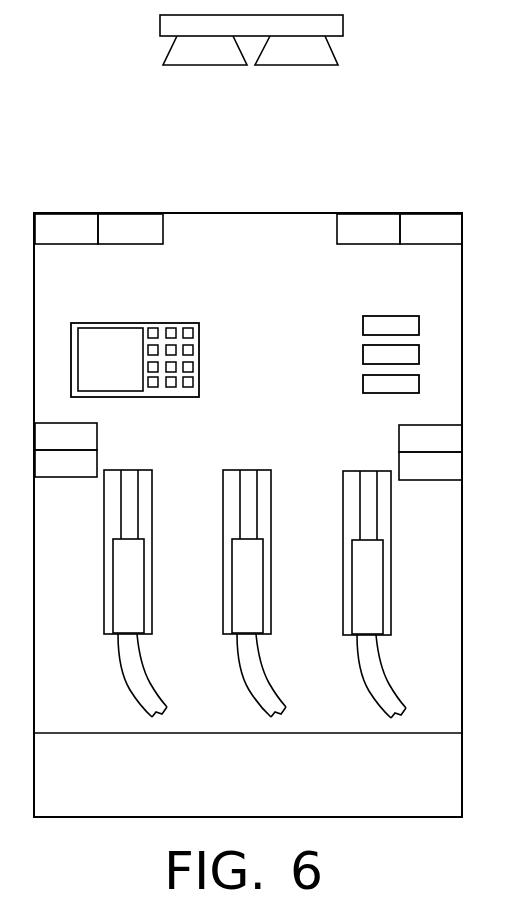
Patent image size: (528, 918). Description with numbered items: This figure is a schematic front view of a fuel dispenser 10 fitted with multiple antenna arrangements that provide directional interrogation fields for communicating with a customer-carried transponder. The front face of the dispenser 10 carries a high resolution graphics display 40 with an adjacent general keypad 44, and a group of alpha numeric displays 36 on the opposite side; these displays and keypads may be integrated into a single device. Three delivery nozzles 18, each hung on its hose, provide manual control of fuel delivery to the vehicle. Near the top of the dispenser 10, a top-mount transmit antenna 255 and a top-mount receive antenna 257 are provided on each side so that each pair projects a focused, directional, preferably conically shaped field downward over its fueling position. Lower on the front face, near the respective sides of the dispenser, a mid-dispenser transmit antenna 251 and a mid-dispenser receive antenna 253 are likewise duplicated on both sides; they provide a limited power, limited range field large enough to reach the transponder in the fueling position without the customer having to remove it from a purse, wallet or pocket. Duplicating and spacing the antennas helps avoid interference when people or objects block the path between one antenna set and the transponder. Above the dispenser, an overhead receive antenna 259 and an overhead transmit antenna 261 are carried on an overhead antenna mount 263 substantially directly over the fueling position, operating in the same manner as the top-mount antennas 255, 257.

The fuel dispenser 10 is at (420, 195).
The delivery nozzle 18 is at (132, 600).
The alpha numeric displays 36 is at (358, 316).
The graphics display 40 is at (93, 338).
The general keypad 44 is at (193, 325).
The mid-dispenser transmit antenna 251 is at (248, 438).
The mid-dispenser receive antenna 253 is at (248, 465).
The top-mount transmit antenna 255 is at (217, 229).
The top-mount receive antenna 257 is at (280, 229).
The overhead receive antenna 259 is at (338, 65).
The overhead transmit antenna 261 is at (163, 65).
The overhead antenna mount 263 is at (160, 24).